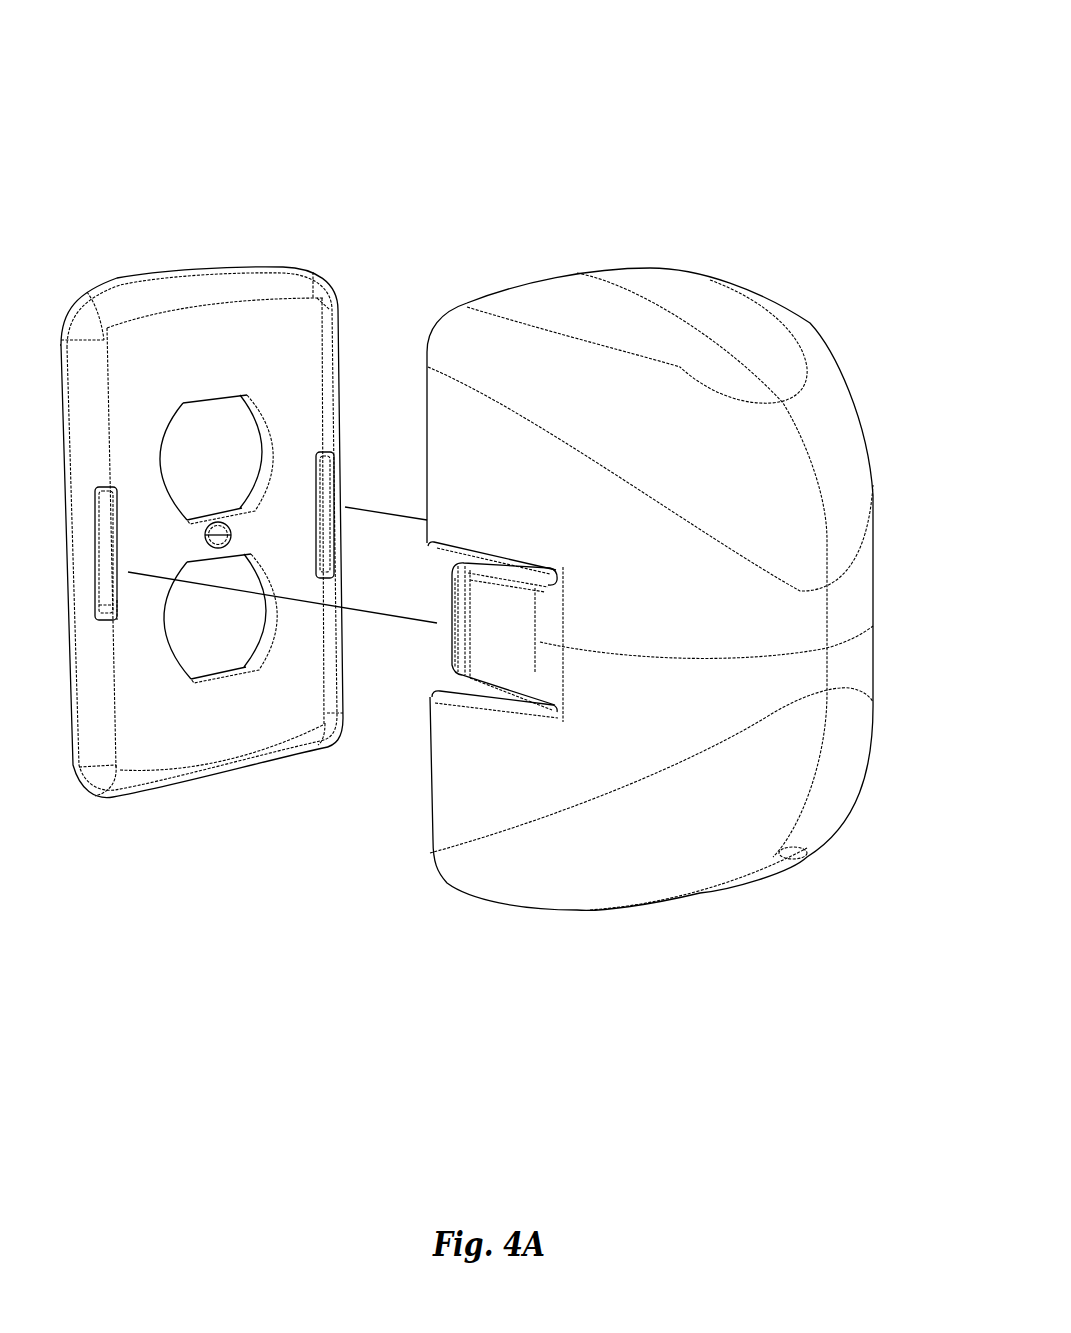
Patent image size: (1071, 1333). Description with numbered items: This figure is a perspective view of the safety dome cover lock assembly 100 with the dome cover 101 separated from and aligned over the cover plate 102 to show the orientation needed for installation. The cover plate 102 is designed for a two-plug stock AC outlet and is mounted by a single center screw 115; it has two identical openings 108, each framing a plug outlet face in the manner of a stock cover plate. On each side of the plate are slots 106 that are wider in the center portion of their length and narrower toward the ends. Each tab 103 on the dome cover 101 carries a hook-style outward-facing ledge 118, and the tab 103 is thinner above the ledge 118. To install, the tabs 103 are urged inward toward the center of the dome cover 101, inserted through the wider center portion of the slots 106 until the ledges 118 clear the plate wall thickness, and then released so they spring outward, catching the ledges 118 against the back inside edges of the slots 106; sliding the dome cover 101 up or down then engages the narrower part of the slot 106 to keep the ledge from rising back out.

The safety dome cover lock assembly 100 is at (553, 113).
The dome cover 101 is at (610, 325).
The cover plate 102 is at (268, 313).
The tab 103 is at (502, 663).
The slots 106 is at (107, 527).
The openings 108 is at (215, 468).
The center screw 115 is at (231, 535).
The ledge 118 is at (455, 643).